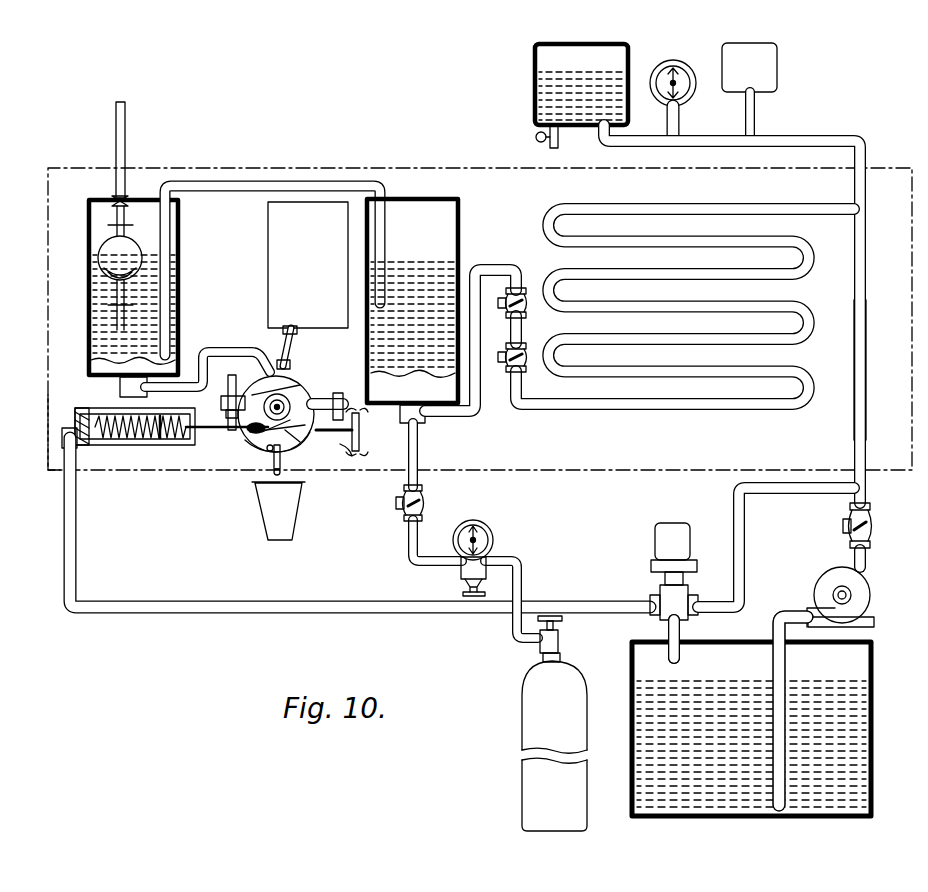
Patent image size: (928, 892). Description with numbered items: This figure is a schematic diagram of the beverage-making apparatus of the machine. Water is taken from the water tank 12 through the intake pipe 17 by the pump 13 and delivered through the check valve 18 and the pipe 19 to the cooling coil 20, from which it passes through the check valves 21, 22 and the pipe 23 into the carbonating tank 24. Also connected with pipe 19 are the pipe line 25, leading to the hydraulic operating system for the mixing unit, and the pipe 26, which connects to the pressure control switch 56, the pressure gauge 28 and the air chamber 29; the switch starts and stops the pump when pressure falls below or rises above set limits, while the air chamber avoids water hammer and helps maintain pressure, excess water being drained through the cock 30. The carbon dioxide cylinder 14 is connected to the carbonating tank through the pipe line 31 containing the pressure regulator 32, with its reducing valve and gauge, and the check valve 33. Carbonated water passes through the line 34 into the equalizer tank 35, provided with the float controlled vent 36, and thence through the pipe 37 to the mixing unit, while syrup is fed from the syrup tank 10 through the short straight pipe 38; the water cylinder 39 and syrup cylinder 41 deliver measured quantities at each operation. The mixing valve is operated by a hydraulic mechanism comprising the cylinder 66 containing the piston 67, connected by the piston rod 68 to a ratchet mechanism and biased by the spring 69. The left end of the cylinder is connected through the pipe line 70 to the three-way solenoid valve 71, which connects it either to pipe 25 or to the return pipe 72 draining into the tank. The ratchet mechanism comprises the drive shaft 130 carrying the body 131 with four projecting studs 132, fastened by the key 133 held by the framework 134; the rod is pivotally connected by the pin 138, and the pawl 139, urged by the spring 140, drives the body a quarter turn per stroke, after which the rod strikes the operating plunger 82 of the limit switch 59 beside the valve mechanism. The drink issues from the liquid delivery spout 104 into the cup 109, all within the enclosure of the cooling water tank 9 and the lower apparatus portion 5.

The apparatus portion 5 is at (30, 432).
The cooling water tank 9 is at (48, 232).
The syrup tank 10 is at (308, 265).
The water tank 12 is at (860, 652).
The pump 13 is at (831, 579).
The carbon dioxide cylinder 14 is at (554, 723).
The intake pipe 17 is at (790, 604).
The check valve 18 is at (848, 520).
The pipe 19 is at (854, 437).
The cooling coil 20 is at (700, 412).
The check valve 21 is at (524, 370).
The check valve 22 is at (524, 306).
The pipe 23 is at (478, 419).
The carbonating tank 24 is at (462, 240).
The pipe line 25 is at (785, 494).
The pipe 26 is at (822, 128).
The pressure gauge 28 is at (686, 60).
The air chamber 29 is at (533, 60).
The cock 30 is at (536, 138).
The pipe line 31 is at (419, 450).
The pressure regulator 32 is at (479, 522).
The check valve 33 is at (400, 513).
The line 34 is at (245, 192).
The equalizer tank 35 is at (182, 309).
The float controlled vent 36 is at (116, 200).
The pipe 37 is at (234, 340).
The short straight pipe 38 is at (281, 398).
The water cylinder 39 is at (238, 392).
The syrup cylinder 41 is at (312, 397).
The indicator box 56 is at (749, 90).
The valve plate 59 is at (361, 433).
The cylinder 66 is at (160, 446).
The piston 67 is at (89, 438).
The piston rod 68 is at (212, 440).
The spring 69 is at (178, 447).
The pipe line 70 is at (77, 576).
The three-way solenoid valve 71 is at (665, 539).
The return pipe 72 is at (681, 658).
The operating plunger 82 is at (352, 456).
The liquid delivery spout 104 is at (270, 452).
The cup 109 is at (273, 528).
The drive shaft 130 is at (230, 402).
The body 131 is at (305, 396).
The projecting studs 132 is at (283, 360).
The key 133 is at (300, 405).
The framework 134 is at (296, 438).
The pin 138 is at (252, 434).
The pawl 139 is at (300, 424).
The spring 140 is at (270, 458).